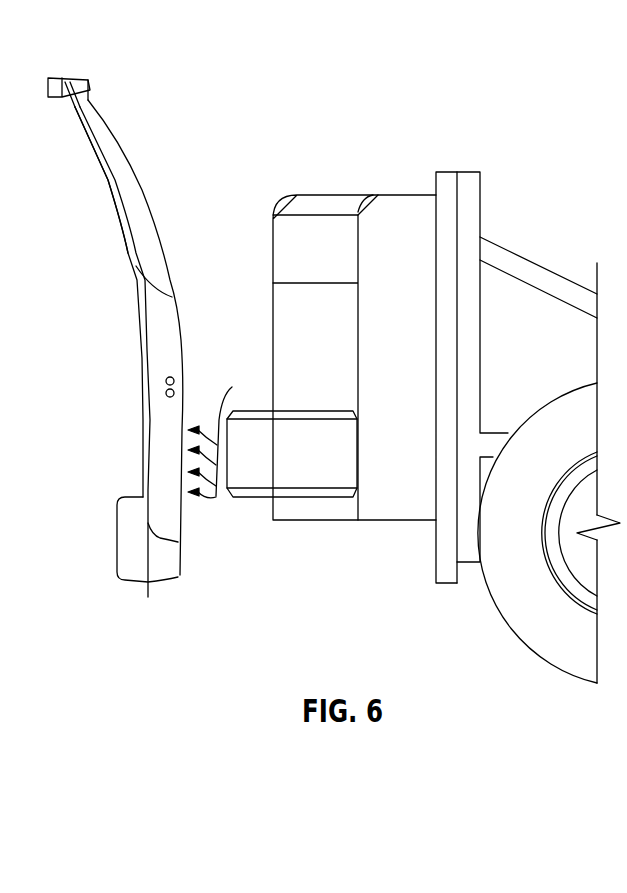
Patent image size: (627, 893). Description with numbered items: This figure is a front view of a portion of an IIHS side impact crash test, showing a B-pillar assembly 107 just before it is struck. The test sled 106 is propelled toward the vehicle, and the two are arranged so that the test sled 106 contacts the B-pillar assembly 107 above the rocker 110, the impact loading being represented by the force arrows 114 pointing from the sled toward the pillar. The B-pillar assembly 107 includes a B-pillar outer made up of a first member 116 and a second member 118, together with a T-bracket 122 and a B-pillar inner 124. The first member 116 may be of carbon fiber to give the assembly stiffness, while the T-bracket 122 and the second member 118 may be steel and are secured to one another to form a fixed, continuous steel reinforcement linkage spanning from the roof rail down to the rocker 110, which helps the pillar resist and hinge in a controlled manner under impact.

The test sled 106 is at (484, 169).
The B-pillar assembly 107 is at (88, 92).
The rocker 110 is at (172, 565).
The force arrows 114 is at (272, 429).
The first member 116 is at (137, 178).
The second member 118 is at (176, 324).
The T-bracket 122 is at (128, 254).
The B-pillar inner 124 is at (143, 358).